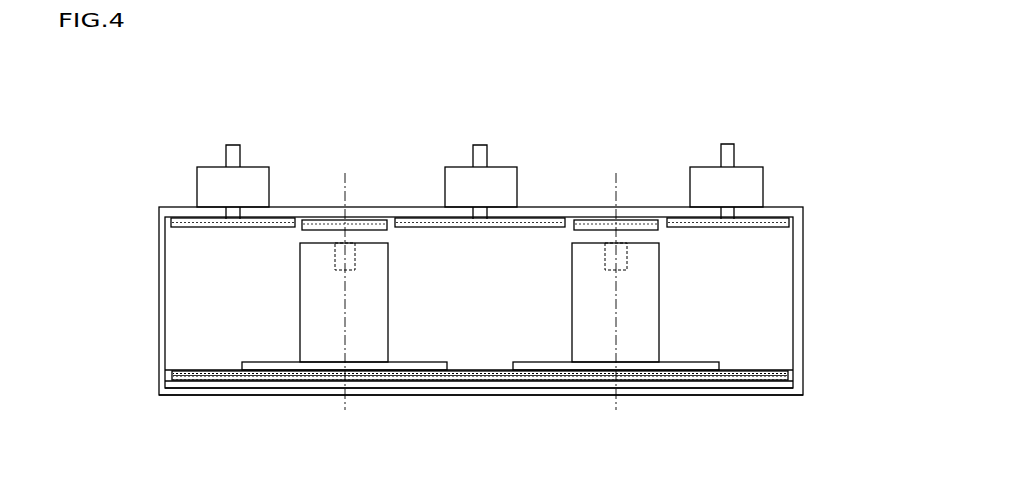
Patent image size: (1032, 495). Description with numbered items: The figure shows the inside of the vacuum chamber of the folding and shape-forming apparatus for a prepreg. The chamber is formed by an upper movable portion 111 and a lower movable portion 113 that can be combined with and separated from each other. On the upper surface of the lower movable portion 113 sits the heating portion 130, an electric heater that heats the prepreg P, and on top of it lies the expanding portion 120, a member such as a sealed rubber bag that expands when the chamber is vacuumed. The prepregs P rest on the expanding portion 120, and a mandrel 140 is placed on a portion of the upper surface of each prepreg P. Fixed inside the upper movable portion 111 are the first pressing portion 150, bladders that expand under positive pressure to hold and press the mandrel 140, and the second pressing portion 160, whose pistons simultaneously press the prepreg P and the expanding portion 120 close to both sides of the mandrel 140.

The upper movable portion 111 is at (162, 252).
The lower movable portion 113 is at (498, 393).
The expanding portion 120 is at (792, 375).
The heating portion 130 is at (583, 385).
The mandrel 140 is at (322, 297).
The first pressing portion 150 is at (363, 228).
The second pressing portion 160 is at (282, 222).
The prepreg P is at (412, 367).